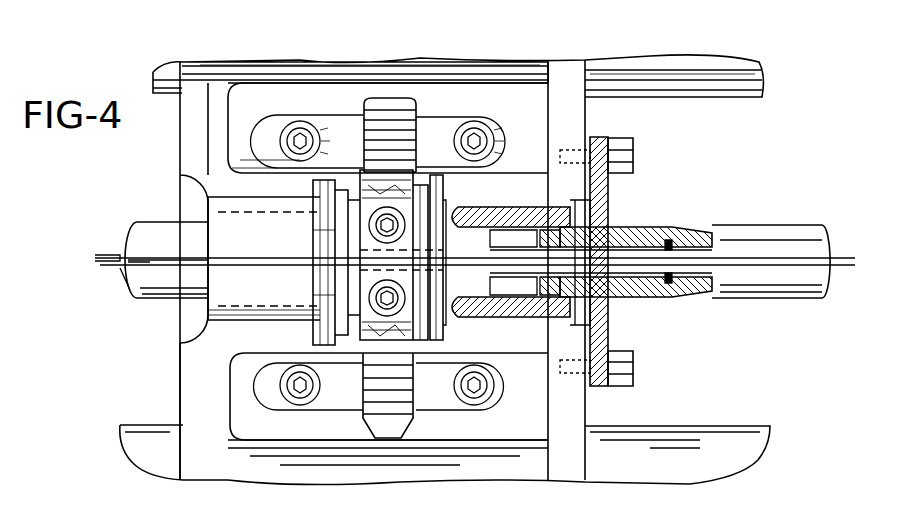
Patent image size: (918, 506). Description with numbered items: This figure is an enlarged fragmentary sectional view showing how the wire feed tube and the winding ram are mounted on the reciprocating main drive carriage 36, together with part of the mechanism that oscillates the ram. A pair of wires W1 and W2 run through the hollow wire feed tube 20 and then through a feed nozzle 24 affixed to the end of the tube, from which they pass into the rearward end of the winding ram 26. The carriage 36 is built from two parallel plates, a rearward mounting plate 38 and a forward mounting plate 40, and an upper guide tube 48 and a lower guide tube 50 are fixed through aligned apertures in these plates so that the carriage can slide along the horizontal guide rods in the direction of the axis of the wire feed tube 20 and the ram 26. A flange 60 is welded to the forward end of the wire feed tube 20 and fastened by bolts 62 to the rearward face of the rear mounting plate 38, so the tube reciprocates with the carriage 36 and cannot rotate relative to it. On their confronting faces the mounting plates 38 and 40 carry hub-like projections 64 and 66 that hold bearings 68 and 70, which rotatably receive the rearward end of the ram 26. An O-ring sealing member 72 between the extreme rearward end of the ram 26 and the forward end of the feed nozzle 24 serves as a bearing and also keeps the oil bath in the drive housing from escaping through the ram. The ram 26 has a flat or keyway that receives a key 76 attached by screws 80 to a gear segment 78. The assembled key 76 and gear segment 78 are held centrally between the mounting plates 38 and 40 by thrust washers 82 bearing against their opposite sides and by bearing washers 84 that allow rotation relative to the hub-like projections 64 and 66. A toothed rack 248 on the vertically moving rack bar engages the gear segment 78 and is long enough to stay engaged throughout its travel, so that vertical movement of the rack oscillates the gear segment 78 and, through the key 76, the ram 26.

The wire feed tube 20 is at (780, 232).
The feed nozzle 24 is at (490, 222).
The winding ram 26 is at (152, 226).
The main drive carriage 36 is at (375, 54).
The rearward mounting plate 38 is at (565, 62).
The forward mounting plate 40 is at (196, 128).
The upper guide tube 48 is at (250, 62).
The lower guide tube 50 is at (690, 440).
The flange 60 is at (612, 198).
The bolts 62 is at (636, 148).
The hub-like projection 64 is at (512, 172).
The hub-like projection 66 is at (248, 172).
The bearing 68 is at (505, 210).
The bearing 70 is at (233, 212).
The O-ring sealing member 72 is at (550, 296).
The key 76 is at (372, 298).
The gear segment 78 is at (400, 173).
The screws 80 is at (372, 226).
The thrust washers 82 is at (356, 348).
The bearing washers 84 is at (332, 192).
The toothed rack 248 is at (370, 120).
The wire W1 is at (100, 256).
The wire W2 is at (106, 268).